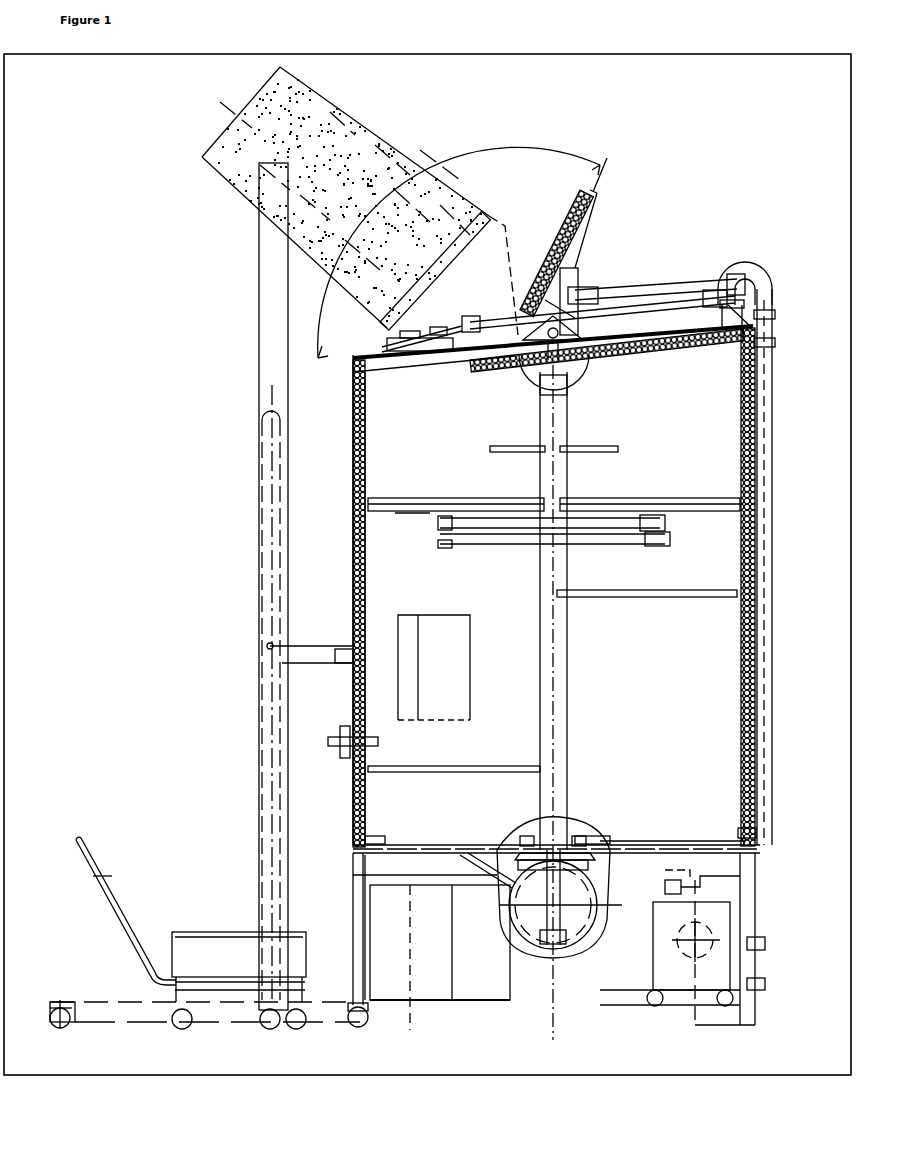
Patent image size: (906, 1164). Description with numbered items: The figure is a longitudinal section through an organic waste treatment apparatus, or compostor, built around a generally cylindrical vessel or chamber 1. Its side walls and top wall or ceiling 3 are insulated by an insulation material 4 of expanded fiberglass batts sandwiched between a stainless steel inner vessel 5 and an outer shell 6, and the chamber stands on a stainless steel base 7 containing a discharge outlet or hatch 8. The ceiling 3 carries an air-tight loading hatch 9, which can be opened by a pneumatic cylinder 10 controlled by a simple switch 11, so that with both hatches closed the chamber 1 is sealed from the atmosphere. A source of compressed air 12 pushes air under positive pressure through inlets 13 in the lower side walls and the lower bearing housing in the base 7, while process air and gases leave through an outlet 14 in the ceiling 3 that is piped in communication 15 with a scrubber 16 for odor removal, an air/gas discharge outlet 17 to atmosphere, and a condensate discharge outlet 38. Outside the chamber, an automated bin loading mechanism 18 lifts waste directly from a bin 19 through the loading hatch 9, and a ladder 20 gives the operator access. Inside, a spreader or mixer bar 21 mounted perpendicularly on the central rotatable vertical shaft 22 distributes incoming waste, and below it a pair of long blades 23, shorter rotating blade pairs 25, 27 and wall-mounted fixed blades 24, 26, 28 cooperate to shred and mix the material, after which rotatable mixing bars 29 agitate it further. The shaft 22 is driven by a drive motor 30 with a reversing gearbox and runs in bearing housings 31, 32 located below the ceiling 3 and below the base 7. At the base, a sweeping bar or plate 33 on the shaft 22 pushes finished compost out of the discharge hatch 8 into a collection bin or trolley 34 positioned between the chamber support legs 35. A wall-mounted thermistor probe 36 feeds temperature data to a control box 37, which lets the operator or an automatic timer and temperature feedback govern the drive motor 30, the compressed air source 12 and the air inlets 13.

The vessel or chamber 1 is at (712, 697).
The top wall or ceiling 3 is at (630, 334).
The insulation material 4 is at (752, 470).
The inner vessel 5 is at (353, 433).
The outer shell 6 is at (353, 411).
The base 7 is at (680, 843).
The discharge outlet or hatch 8 is at (445, 843).
The loading hatch 9 is at (568, 208).
The pneumatic cylinder 10 is at (688, 282).
The switch 11 is at (385, 343).
The source of compressed air 12 is at (498, 991).
The inlets 13 is at (370, 831).
The outlet 14 is at (742, 330).
The piped communication 15 is at (762, 270).
The scrubber 16 is at (733, 922).
The air/gas discharge outlet 17 is at (755, 943).
The automated bin loading mechanism 18 is at (270, 300).
The bin 19 is at (382, 150).
The ladder 20 is at (268, 646).
The spreader or mixer bar 21 is at (619, 451).
The vertical shaft 22 is at (570, 731).
The pair of blades 23 is at (703, 496).
The fixed blade 24 is at (713, 515).
The blade pair 25 is at (408, 543).
The fixed blade 26 is at (420, 549).
The blade pair 27 is at (429, 555).
The fixed blade 28 is at (447, 546).
The rotatable mixing bar 29 is at (682, 600).
The drive motor 30 is at (540, 948).
The bearing housing 31 is at (583, 368).
The bearing housing 32 is at (584, 842).
The sweeping bar or plate 33 is at (660, 843).
The collection bin or trolley 34 is at (240, 898).
The chamber support legs 35 is at (348, 915).
The thermistor probe 36 is at (334, 737).
The control box 37 is at (472, 613).
The condensate discharge outlet 38 is at (755, 984).